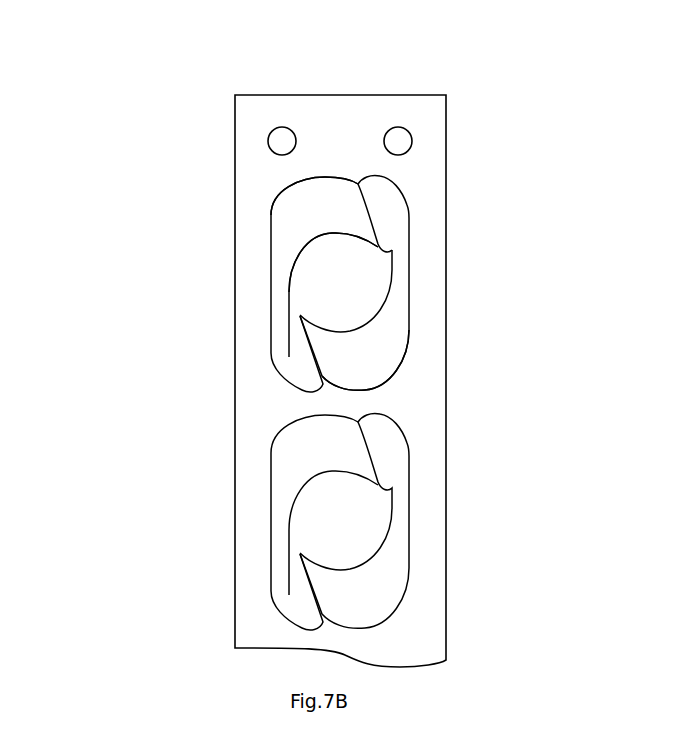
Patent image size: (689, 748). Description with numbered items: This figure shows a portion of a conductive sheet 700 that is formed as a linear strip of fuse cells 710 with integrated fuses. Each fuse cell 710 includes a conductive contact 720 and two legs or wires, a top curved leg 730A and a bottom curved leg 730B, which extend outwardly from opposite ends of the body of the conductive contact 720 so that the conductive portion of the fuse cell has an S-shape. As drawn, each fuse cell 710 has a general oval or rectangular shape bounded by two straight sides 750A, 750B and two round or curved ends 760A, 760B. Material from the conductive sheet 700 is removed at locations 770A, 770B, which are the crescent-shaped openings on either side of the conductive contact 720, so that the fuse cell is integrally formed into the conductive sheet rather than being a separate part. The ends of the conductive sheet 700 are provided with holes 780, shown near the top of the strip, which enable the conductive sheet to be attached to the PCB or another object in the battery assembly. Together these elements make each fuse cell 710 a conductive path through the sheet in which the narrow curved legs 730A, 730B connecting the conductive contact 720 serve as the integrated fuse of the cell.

The conductive sheet 700 is at (165, 93).
The fuse cell 710 is at (432, 205).
The conductive contact 720 is at (330, 296).
The top curved leg 730A is at (380, 216).
The bottom curved leg 730B is at (303, 357).
The straight side 750A is at (268, 295).
The straight side 750B is at (413, 283).
The round or curved end 760A is at (325, 176).
The round or curved end 760B is at (366, 388).
The material removal location 770A is at (292, 228).
The material removal location 770B is at (377, 352).
The hole 780 is at (282, 136).